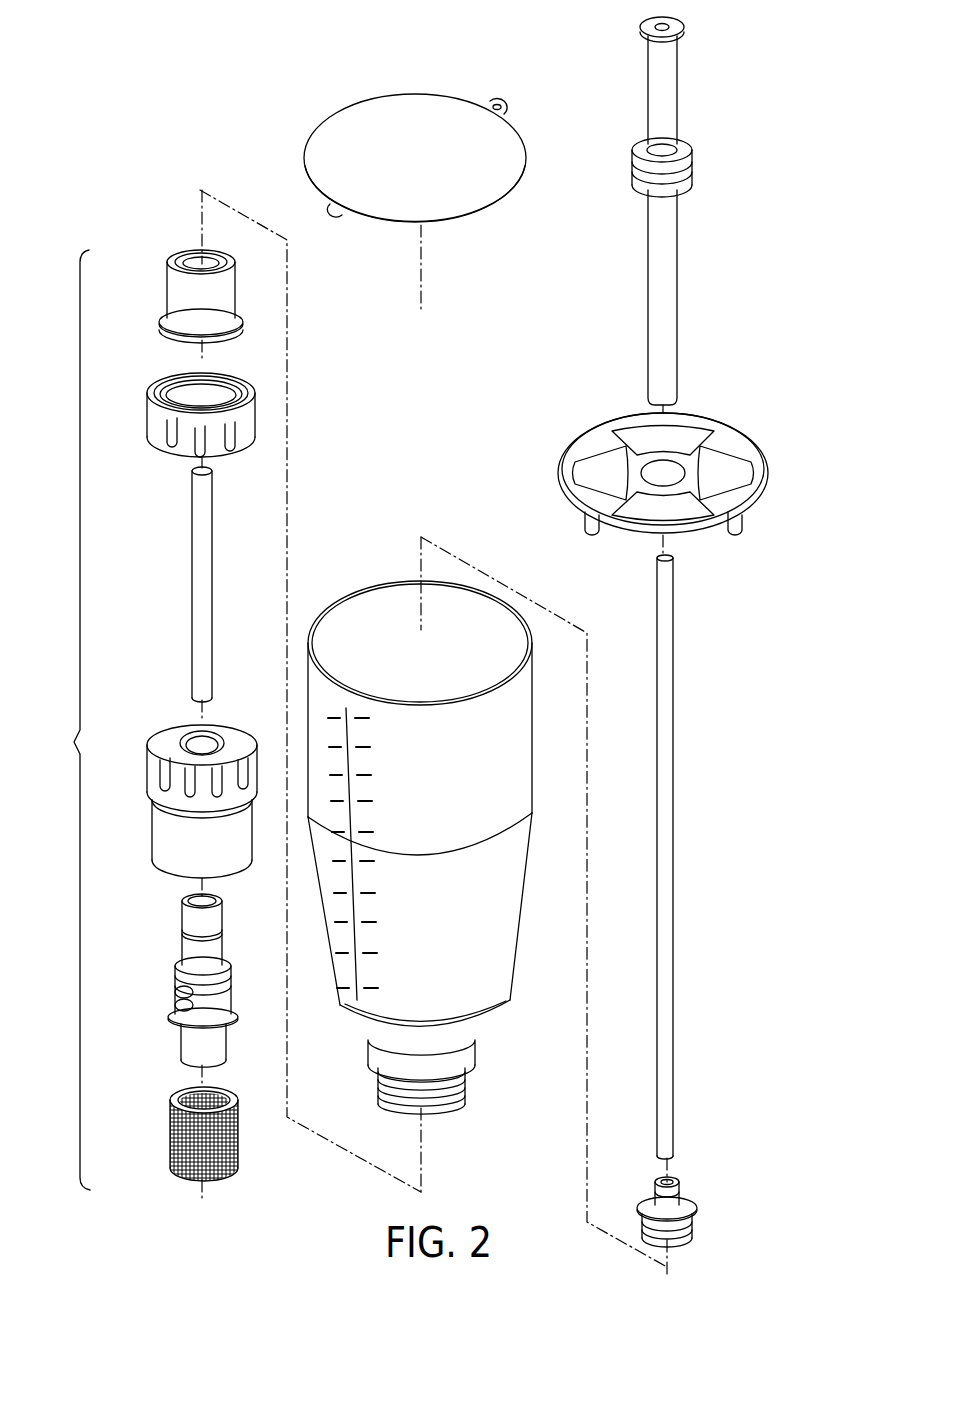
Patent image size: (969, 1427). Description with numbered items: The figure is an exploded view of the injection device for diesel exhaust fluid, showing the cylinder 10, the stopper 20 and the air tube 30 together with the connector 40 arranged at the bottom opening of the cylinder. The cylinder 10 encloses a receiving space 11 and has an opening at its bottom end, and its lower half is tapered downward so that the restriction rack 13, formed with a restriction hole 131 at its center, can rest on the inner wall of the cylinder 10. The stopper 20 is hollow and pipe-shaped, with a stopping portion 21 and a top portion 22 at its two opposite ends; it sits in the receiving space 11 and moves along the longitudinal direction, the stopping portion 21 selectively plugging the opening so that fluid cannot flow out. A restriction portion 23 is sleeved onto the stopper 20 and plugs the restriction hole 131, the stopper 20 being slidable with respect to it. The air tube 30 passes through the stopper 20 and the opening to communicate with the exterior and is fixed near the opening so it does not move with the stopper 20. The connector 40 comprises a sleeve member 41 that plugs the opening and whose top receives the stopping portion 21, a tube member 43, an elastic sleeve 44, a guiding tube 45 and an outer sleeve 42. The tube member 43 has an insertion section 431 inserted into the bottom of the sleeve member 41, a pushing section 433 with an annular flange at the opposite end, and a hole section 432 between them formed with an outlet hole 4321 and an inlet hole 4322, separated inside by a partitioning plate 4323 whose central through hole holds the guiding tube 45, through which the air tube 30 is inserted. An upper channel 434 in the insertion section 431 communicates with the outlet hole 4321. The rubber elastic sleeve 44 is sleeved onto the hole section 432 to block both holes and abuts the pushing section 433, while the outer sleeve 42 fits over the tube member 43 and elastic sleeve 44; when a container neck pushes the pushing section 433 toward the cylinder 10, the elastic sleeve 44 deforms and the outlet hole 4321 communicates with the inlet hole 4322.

The cylinder 10 is at (433, 838).
The receiving space 11 is at (393, 626).
The restriction rack 13 is at (697, 456).
The restriction hole 131 is at (673, 470).
The stopper 20 is at (714, 211).
The stopping portion 21 is at (687, 1203).
The top portion 22 is at (682, 27).
The restriction portion 23 is at (692, 167).
The air tube 30 is at (668, 875).
The connector 40 is at (146, 720).
The sleeve member 41 is at (182, 300).
The outer sleeve 42 is at (168, 825).
The tube member 43 is at (162, 948).
The insertion section 431 is at (192, 922).
The hole section 432 is at (213, 1000).
The pushing section 433 is at (205, 1037).
The upper channel 434 is at (202, 900).
The outlet hole 4321 is at (182, 988).
The inlet hole 4322 is at (170, 1015).
The partitioning plate 4323 is at (178, 999).
The elastic sleeve 44 is at (163, 1153).
The guiding tube 45 is at (195, 545).